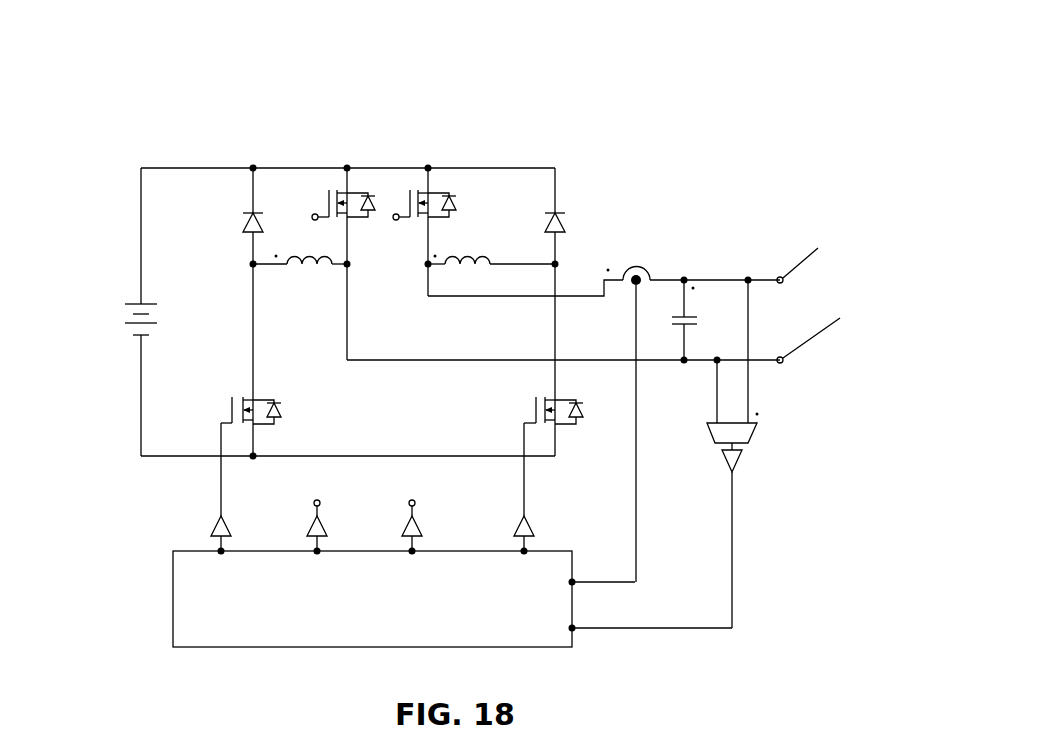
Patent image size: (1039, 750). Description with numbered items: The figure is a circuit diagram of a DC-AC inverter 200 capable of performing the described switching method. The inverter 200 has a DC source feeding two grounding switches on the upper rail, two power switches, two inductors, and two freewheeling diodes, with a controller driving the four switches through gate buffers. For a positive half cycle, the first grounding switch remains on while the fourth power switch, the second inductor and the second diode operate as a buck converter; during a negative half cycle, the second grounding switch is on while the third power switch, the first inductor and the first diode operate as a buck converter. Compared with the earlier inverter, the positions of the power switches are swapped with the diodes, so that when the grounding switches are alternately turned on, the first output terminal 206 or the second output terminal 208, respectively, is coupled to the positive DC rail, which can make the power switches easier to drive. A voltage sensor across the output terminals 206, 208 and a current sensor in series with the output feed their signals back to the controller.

The DC-AC inverter 200 is at (96, 86).
The first output terminal 206 is at (821, 252).
The second output terminal 208 is at (833, 335).